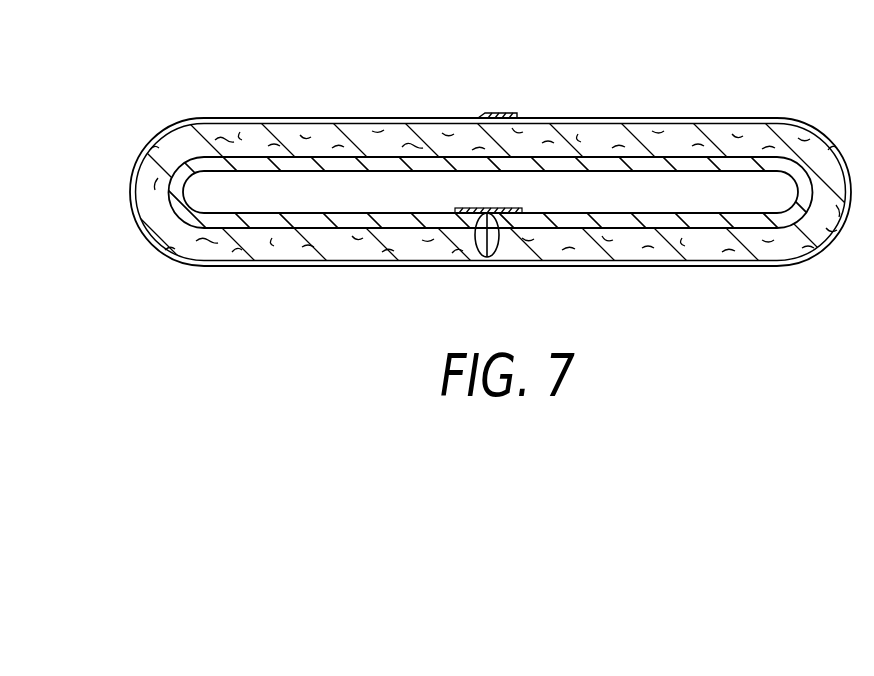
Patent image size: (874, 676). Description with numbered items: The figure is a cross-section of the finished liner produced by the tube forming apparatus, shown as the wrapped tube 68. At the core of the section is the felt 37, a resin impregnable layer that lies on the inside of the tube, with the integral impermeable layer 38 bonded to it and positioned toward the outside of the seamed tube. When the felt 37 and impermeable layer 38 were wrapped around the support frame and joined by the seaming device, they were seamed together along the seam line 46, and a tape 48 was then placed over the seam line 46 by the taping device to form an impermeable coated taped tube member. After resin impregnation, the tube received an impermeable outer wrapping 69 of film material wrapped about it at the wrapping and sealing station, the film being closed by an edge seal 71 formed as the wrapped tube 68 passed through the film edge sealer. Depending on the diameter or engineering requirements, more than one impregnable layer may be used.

The wrapped tube 68 is at (806, 97).
The outer wrapping 69 is at (225, 117).
The felt 37 is at (178, 244).
The impermeable layer 38 is at (332, 211).
The tape 48 is at (460, 208).
The seam line 46 is at (500, 243).
The edge seal 71 is at (513, 113).